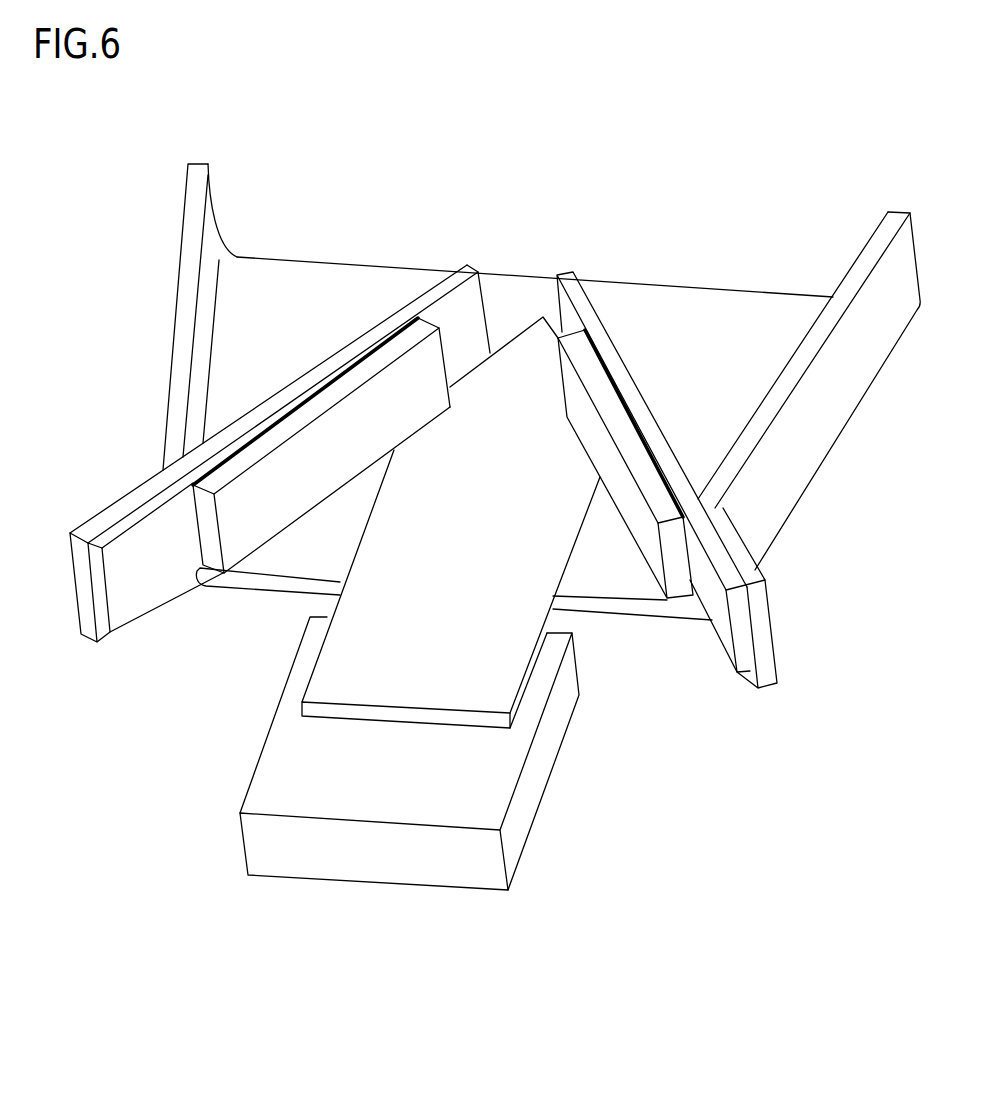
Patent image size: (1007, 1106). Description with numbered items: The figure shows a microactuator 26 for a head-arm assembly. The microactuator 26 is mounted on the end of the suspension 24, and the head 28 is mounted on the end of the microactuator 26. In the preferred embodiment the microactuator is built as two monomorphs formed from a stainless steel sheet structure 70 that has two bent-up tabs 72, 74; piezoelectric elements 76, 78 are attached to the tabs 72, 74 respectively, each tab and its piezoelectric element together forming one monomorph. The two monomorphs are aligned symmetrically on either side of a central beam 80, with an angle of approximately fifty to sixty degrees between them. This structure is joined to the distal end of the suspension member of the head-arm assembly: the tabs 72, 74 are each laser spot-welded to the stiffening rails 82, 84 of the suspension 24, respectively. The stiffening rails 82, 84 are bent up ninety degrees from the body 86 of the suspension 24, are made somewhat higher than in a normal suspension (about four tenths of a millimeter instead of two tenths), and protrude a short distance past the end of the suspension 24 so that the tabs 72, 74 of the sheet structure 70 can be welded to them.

The suspension 24 is at (697, 320).
The microactuator 26 is at (215, 667).
The head 28 is at (367, 862).
The stainless steel sheet structure 70 is at (357, 655).
The bent-up tab 72 is at (125, 607).
The bent-up tab 74 is at (738, 672).
The piezoelectric element 76 is at (357, 378).
The piezoelectric element 78 is at (592, 373).
The central beam 80 is at (515, 607).
The stiffening rail 82 is at (182, 372).
The stiffening rail 84 is at (768, 425).
The body 86 is at (261, 283).